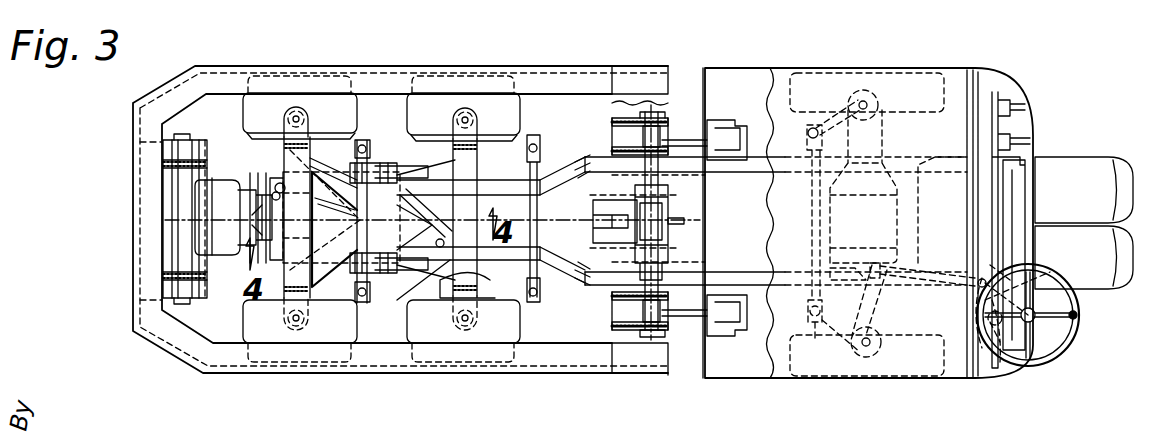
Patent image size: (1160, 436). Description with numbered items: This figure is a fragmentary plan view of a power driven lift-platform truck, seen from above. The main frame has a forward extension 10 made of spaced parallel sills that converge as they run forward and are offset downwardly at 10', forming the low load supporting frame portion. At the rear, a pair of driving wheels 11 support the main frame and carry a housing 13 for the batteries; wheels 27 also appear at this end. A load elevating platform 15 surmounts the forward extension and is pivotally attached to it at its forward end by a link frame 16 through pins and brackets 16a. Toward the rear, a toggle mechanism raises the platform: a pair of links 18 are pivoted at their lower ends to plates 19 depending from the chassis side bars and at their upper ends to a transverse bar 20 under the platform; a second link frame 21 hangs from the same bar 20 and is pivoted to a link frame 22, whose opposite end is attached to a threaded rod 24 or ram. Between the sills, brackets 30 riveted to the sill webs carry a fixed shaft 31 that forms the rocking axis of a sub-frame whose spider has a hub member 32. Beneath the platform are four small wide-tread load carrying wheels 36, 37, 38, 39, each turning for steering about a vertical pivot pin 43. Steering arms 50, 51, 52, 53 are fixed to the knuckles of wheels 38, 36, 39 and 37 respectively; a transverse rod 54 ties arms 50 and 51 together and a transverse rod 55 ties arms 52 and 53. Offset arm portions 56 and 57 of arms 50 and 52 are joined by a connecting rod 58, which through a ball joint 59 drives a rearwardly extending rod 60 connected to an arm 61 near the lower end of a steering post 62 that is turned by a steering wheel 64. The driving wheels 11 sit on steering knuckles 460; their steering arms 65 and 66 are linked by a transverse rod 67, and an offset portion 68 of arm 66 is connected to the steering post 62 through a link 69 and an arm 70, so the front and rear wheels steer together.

The forward extension 10 is at (776, 221).
The offset 10' is at (496, 230).
The driving wheels 11 is at (960, 82).
The housing 13 is at (820, 92).
The load elevating platform 15 is at (398, 80).
The link frame 16 is at (232, 280).
The pins and brackets 16a is at (120, 229).
The links 18 is at (682, 132).
The plates 19 is at (738, 225).
The transverse bar 20 is at (662, 335).
The second link frame 21 is at (666, 193).
The link frame 22 is at (672, 236).
The threaded rod 24 is at (686, 222).
The rear wheel 27 is at (1085, 172).
The brackets 30 is at (377, 162).
The fixed shaft 31 is at (428, 280).
The hub member 32 is at (392, 262).
The load carrying wheel 36 is at (300, 342).
The load carrying wheel 37 is at (425, 342).
The load carrying wheel 38 is at (257, 103).
The load carrying wheel 39 is at (485, 105).
The pivot pin 43 is at (300, 110).
The steering arm 50 is at (318, 152).
The steering arm 51 is at (318, 300).
The steering arm 52 is at (492, 160).
The steering arm 53 is at (485, 300).
The transverse rod 54 is at (410, 272).
The transverse rod 55 is at (538, 228).
The offset arm portion 56 is at (285, 180).
The offset arm portion 57 is at (470, 240).
The connecting rod 58 is at (345, 210).
The ball joint 59 is at (470, 276).
The rearwardly extending rod 60 is at (612, 266).
The arm 61 is at (1040, 292).
The steering post 62 is at (998, 360).
The steering wheel 64 is at (1055, 352).
The steering arm 65 is at (878, 126).
The steering arm 66 is at (820, 340).
The transverse rod 67 is at (898, 186).
The offset portion 68 is at (878, 311).
The link 69 is at (924, 276).
The arm 70 is at (985, 290).
The steering knuckles 460 is at (875, 108).